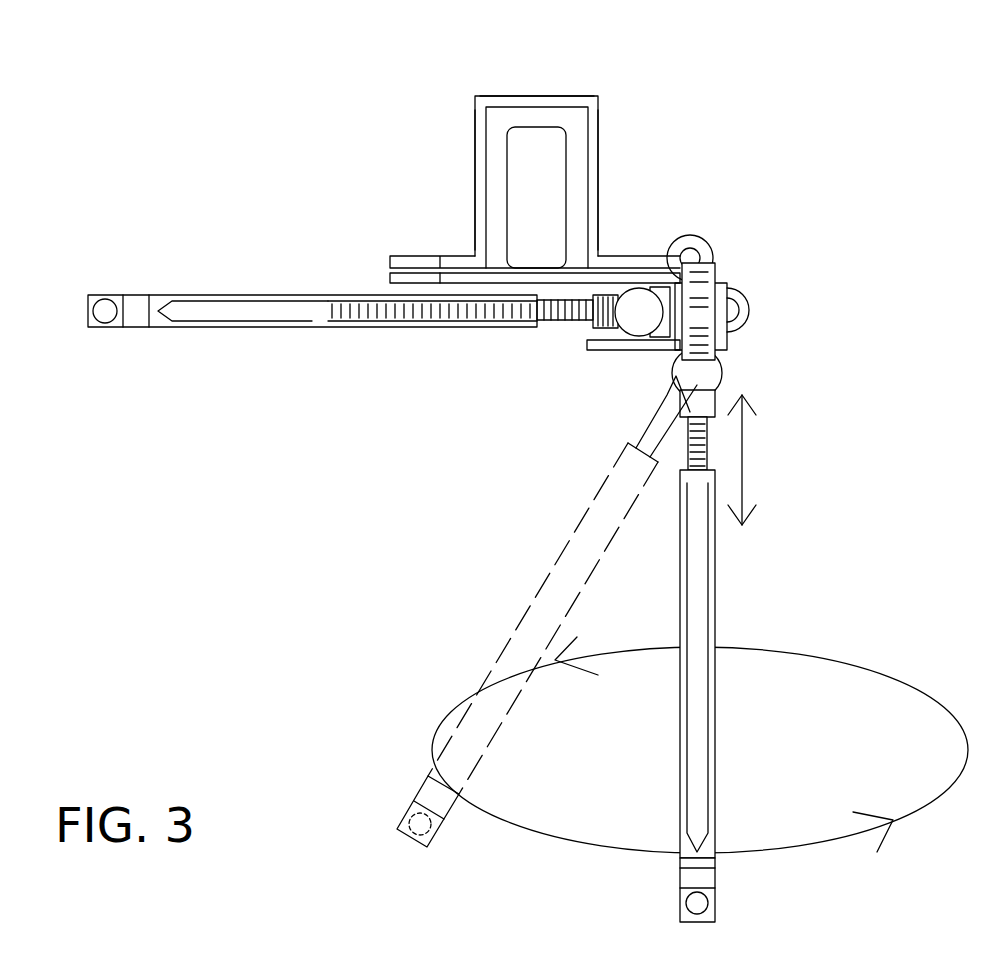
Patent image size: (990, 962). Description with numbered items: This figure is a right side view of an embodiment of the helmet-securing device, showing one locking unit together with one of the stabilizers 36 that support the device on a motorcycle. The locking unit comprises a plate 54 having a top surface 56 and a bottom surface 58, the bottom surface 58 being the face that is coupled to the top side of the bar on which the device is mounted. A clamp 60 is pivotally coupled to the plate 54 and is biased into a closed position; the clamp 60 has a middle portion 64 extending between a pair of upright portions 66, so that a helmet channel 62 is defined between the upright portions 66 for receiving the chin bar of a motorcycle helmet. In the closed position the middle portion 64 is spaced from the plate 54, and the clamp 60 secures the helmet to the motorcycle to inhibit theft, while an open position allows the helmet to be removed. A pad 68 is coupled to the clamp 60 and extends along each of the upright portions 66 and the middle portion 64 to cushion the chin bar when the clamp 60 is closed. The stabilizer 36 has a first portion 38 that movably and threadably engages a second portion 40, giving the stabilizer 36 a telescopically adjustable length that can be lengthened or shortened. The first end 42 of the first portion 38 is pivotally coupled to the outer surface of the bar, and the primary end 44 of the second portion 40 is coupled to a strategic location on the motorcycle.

The stabilizer 36 is at (718, 612).
The first portion 38 is at (760, 443).
The second portion 40 is at (760, 690).
The first end 42 is at (717, 357).
The primary end 44 is at (707, 922).
The plate 54 is at (450, 277).
The top surface 56 is at (407, 273).
The bottom surface 58 is at (412, 283).
The clamp 60 is at (620, 256).
The helmet channel 62 is at (539, 134).
The middle portion 64 is at (487, 96).
The upright portion 66 is at (475, 158).
The pad 68 is at (565, 222).